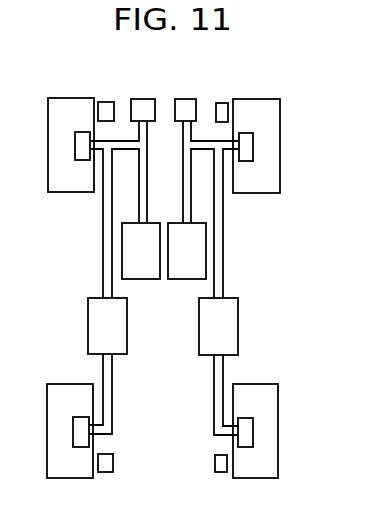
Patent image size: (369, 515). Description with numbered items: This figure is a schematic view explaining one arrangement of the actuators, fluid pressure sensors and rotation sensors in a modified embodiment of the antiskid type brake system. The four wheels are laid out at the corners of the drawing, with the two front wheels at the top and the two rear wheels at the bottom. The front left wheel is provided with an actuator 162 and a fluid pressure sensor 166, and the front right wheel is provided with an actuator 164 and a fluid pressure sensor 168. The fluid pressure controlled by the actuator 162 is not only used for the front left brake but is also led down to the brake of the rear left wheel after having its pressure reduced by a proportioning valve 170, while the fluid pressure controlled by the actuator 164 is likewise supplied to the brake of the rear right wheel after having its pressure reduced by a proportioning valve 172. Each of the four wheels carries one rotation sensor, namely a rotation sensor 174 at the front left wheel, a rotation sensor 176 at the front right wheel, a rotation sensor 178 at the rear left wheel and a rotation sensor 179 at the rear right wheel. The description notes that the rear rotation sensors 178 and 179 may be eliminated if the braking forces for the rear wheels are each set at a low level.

The actuator 162 is at (122, 252).
The actuator 164 is at (206, 254).
The fluid pressure sensor 166 is at (141, 99).
The fluid pressure sensor 168 is at (184, 99).
The proportioning valve 170 is at (88, 328).
The proportioning valve 172 is at (238, 330).
The rotation sensor 174 is at (106, 101).
The rotation sensor 176 is at (222, 103).
The rotation sensor 178 is at (113, 463).
The rotation sensor 179 is at (215, 468).